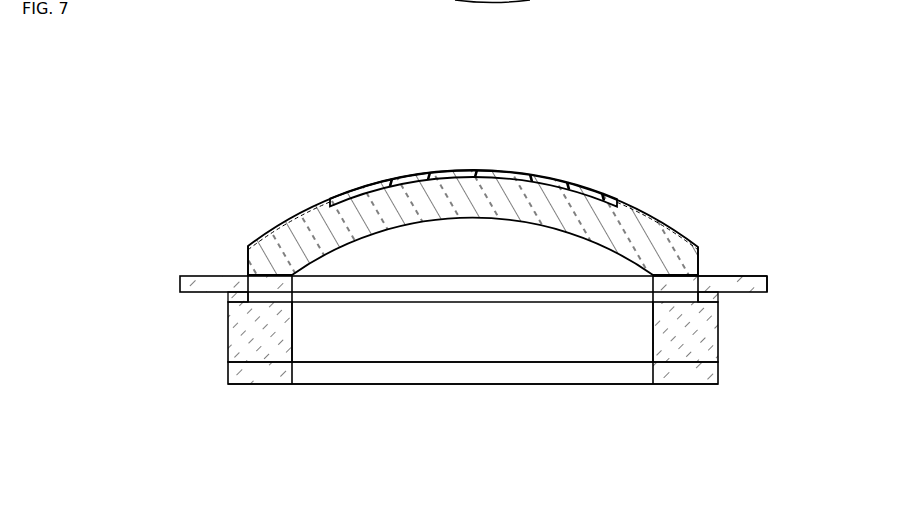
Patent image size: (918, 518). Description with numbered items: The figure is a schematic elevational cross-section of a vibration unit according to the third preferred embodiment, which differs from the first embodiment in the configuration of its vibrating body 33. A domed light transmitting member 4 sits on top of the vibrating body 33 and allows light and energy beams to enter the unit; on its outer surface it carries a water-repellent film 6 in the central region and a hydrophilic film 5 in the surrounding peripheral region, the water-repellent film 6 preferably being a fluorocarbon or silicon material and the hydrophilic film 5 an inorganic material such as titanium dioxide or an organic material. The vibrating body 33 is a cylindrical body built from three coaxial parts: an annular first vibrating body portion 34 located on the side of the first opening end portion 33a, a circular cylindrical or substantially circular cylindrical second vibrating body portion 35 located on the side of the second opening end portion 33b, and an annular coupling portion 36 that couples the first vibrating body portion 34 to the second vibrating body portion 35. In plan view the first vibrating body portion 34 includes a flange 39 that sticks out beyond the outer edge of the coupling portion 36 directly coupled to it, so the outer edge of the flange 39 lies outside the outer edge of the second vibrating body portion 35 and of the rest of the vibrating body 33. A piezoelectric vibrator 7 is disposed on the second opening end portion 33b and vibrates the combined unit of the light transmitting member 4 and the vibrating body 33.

The light transmitting member 4 is at (497, 172).
The hydrophilic film 5 is at (307, 208).
The water-repellent film 6 is at (353, 190).
The piezoelectric vibrator 7 is at (705, 384).
The vibrating body 33 is at (533, 317).
The first opening end portion 33a is at (662, 277).
The second opening end portion 33b is at (663, 384).
The first vibrating body portion 34 is at (767, 283).
The second vibrating body portion 35 is at (718, 335).
The coupling portion 36 is at (718, 298).
The flange 39 is at (765, 277).